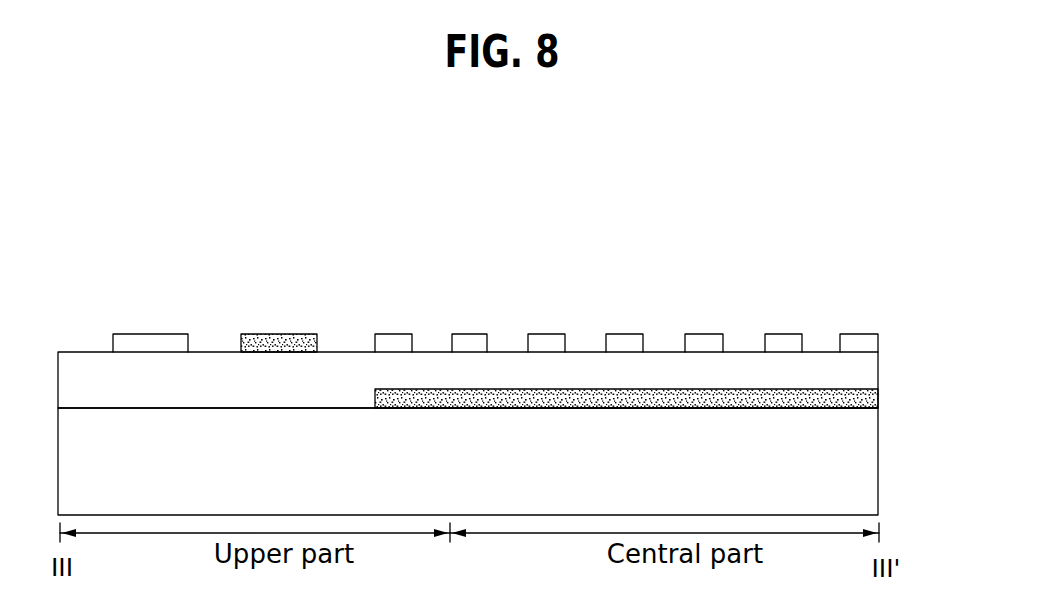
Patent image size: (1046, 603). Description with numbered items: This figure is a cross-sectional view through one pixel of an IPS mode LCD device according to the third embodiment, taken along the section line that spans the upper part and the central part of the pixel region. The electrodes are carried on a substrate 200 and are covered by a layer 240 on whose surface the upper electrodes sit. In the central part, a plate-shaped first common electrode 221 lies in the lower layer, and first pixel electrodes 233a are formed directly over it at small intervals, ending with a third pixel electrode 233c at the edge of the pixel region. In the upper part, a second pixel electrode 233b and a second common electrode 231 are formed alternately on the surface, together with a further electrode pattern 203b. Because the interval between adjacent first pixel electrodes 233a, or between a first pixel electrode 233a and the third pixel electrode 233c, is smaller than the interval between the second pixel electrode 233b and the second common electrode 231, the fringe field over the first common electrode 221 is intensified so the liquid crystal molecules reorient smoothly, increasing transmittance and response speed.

The substrate 200 is at (865, 471).
The insulating layer 240 is at (865, 373).
The first common electrode 221 is at (598, 410).
The upper electrode pattern 203b is at (152, 340).
The second common electrode 231 is at (279, 340).
The second pixel electrode 233b is at (398, 340).
The first pixel electrodes 233a is at (468, 342).
The third pixel electrode 233c is at (857, 340).